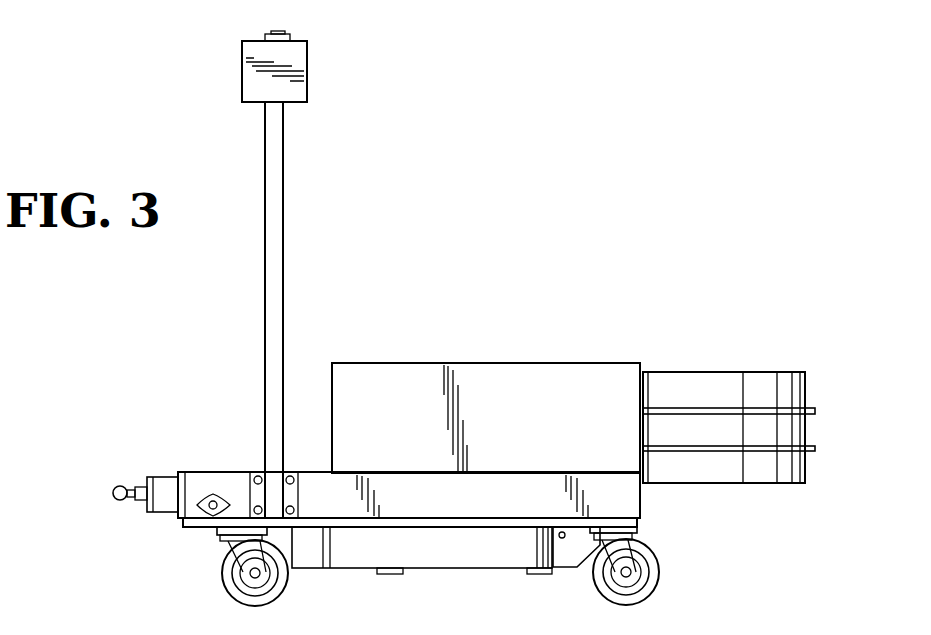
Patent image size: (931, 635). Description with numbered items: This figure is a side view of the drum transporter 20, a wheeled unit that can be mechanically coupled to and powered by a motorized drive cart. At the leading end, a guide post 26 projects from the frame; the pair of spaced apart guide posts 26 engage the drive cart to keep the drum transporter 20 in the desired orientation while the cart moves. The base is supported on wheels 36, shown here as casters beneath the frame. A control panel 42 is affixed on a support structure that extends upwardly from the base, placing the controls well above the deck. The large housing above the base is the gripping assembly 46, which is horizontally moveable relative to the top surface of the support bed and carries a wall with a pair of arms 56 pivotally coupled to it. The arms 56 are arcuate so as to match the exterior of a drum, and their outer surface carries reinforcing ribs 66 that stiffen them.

The drum transporter 20 is at (634, 241).
The guide posts 26 is at (116, 500).
The wheels 36 is at (282, 597).
The control panel 42 is at (307, 62).
The gripping assembly 46 is at (496, 318).
The arms 56 is at (695, 382).
The ribs 66 is at (815, 410).